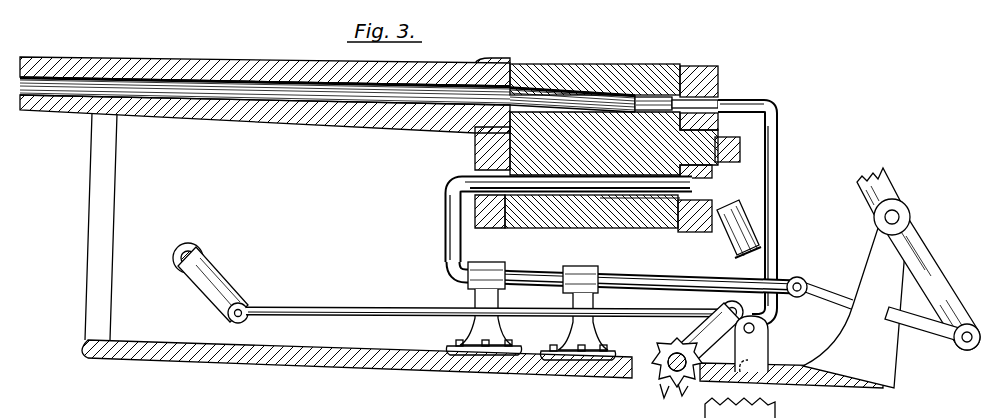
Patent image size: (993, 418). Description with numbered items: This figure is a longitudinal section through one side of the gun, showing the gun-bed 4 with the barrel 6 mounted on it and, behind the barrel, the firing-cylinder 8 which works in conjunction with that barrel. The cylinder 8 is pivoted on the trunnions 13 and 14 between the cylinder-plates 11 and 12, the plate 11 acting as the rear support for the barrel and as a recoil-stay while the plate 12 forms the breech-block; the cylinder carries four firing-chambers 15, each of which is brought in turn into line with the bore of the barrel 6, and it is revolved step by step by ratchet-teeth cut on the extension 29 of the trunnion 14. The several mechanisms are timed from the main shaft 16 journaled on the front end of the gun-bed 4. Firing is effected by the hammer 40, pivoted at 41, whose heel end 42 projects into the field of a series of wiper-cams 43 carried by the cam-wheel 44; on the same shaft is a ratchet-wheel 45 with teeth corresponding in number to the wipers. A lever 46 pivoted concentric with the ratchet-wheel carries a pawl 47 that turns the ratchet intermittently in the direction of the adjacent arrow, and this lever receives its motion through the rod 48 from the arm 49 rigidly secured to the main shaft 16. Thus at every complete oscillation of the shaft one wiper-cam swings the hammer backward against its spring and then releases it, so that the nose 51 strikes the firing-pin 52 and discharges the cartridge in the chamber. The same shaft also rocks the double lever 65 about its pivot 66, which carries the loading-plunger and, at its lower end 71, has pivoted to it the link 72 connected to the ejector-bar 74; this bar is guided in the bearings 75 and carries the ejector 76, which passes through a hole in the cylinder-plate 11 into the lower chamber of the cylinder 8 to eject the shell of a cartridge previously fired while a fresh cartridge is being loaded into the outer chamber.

The gun-bed 4 is at (441, 369).
The barrel 6 is at (336, 113).
The firing-cylinder 8 is at (581, 83).
The cylinder-plate 11 is at (474, 219).
The cylinder-plate 12 is at (701, 233).
The trunnion 13 is at (486, 150).
The trunnion 14 is at (713, 172).
The firing-chamber 15 is at (613, 99).
The main shaft 16 is at (196, 252).
The extension of trunnion 29 is at (738, 153).
The hammer 40 is at (779, 224).
The hammer pivot 41 is at (769, 331).
The heel end 42 is at (740, 402).
The wiper-cam 43 is at (667, 398).
The cam-wheel 44 is at (663, 367).
The ratchet-wheel 45 is at (683, 388).
The lever 46 is at (690, 353).
The pawl 47 is at (698, 330).
The rod 48 is at (366, 309).
The arm 49 is at (233, 292).
The nose 51 is at (739, 104).
The firing-pin 52 is at (723, 99).
The double lever 65 is at (926, 251).
The pivot of double lever 66 is at (899, 216).
The pivot at lower end of lever 71 is at (963, 345).
The link 72 is at (926, 331).
The ejector-bar 74 is at (628, 273).
The bearing 75 is at (497, 263).
The ejector 76 is at (455, 181).